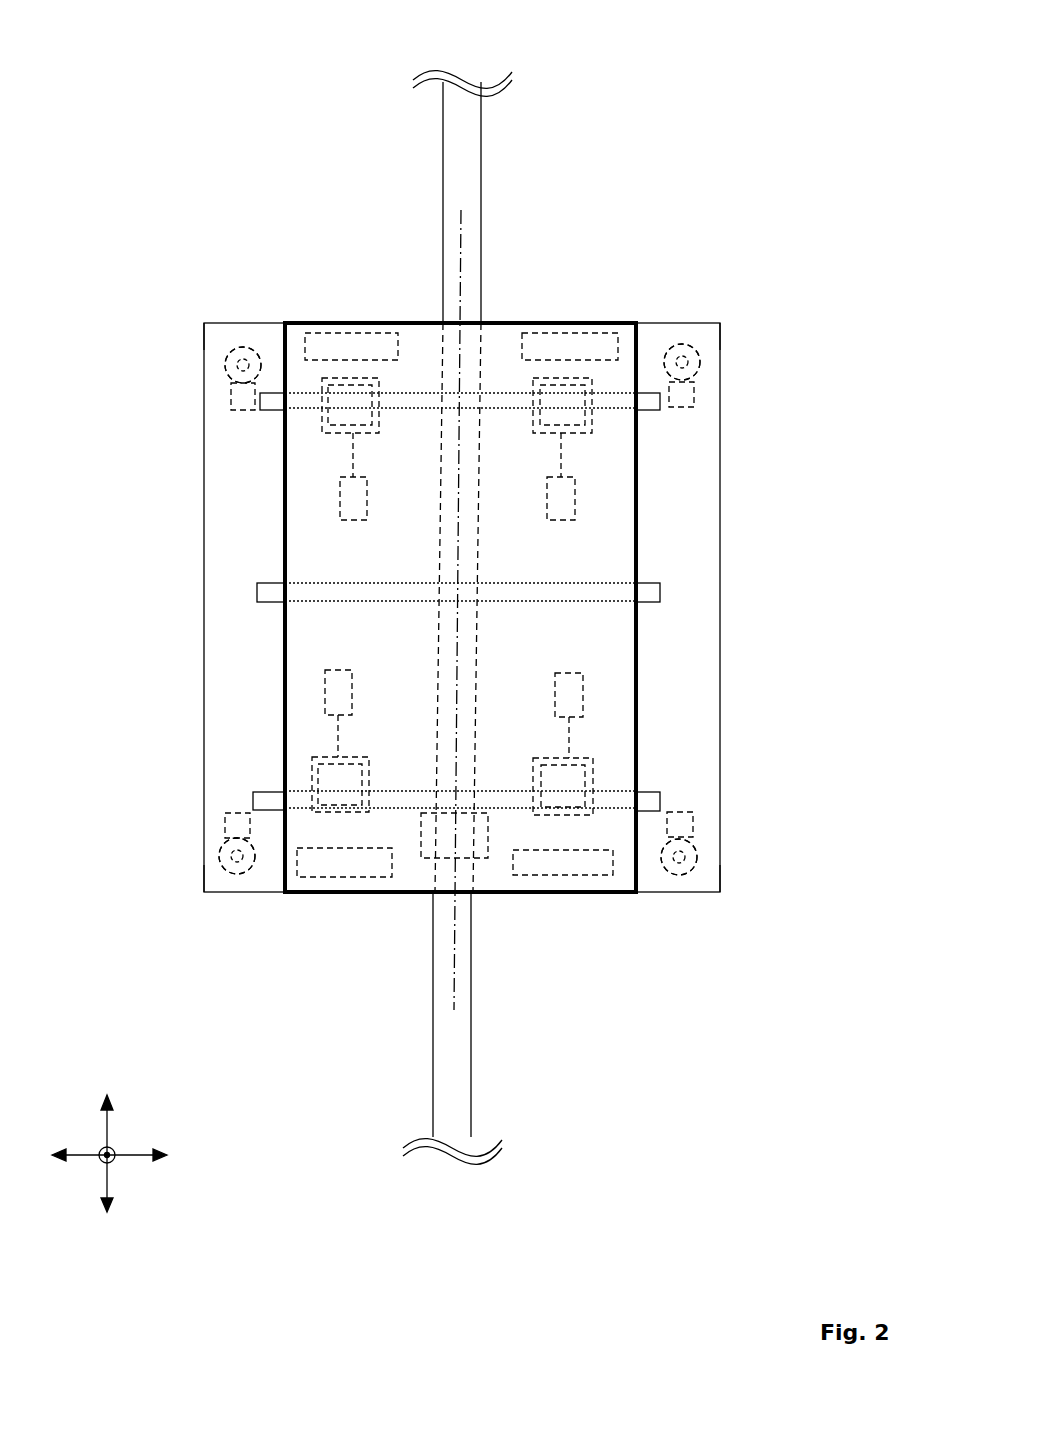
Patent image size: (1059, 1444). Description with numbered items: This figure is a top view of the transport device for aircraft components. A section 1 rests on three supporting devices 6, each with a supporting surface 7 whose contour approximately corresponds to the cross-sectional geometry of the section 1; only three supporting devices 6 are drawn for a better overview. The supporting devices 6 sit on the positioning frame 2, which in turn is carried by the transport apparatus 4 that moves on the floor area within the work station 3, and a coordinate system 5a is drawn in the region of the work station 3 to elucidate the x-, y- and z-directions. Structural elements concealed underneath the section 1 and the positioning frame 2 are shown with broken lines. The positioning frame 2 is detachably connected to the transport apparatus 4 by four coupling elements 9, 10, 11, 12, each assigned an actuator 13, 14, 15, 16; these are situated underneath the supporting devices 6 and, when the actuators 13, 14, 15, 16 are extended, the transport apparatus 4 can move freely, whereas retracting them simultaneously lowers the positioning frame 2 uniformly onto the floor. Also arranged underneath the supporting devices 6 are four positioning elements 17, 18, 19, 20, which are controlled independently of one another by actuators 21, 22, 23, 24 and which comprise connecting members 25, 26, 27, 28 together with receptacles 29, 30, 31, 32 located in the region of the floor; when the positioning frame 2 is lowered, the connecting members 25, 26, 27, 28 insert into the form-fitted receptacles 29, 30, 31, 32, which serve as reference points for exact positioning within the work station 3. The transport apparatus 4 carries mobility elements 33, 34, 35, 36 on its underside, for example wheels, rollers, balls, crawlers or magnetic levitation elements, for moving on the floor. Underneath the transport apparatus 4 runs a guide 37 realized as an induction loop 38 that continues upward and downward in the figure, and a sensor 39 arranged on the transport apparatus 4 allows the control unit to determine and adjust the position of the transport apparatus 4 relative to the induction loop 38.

The section 1 is at (507, 323).
The positioning frame 2 is at (697, 632).
The work station 3 is at (212, 20).
The transport apparatus 4 is at (413, 355).
The coordinate system 5a is at (110, 1185).
The supporting device 6 is at (272, 405).
The supporting surface 7 is at (654, 405).
The coupling element 9 is at (327, 788).
The coupling element 10 is at (578, 788).
The coupling element 11 is at (338, 417).
The coupling element 12 is at (575, 415).
The actuator 13 is at (335, 693).
The actuator 14 is at (568, 698).
The actuator 15 is at (342, 500).
The actuator 16 is at (567, 497).
The positioning element 17 is at (202, 886).
The positioning element 18 is at (693, 876).
The positioning element 19 is at (224, 342).
The positioning element 20 is at (696, 339).
The actuator 21 is at (242, 827).
The actuator 22 is at (683, 826).
The actuator 23 is at (238, 402).
The actuator 24 is at (695, 398).
The connecting member 25 is at (237, 862).
The connecting member 26 is at (680, 860).
The connecting member 27 is at (243, 360).
The connecting member 28 is at (680, 360).
The receptacle 29 is at (250, 870).
The receptacle 30 is at (662, 866).
The receptacle 31 is at (250, 350).
The receptacle 32 is at (685, 345).
The mobility element 33 is at (345, 865).
The mobility element 34 is at (558, 862).
The mobility element 35 is at (352, 348).
The mobility element 36 is at (574, 345).
The guide 37 is at (494, 112).
The induction loop 38 is at (462, 1072).
The sensor 39 is at (465, 840).